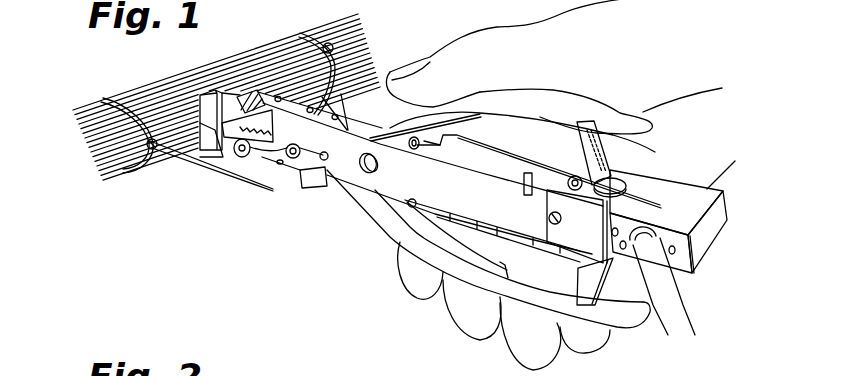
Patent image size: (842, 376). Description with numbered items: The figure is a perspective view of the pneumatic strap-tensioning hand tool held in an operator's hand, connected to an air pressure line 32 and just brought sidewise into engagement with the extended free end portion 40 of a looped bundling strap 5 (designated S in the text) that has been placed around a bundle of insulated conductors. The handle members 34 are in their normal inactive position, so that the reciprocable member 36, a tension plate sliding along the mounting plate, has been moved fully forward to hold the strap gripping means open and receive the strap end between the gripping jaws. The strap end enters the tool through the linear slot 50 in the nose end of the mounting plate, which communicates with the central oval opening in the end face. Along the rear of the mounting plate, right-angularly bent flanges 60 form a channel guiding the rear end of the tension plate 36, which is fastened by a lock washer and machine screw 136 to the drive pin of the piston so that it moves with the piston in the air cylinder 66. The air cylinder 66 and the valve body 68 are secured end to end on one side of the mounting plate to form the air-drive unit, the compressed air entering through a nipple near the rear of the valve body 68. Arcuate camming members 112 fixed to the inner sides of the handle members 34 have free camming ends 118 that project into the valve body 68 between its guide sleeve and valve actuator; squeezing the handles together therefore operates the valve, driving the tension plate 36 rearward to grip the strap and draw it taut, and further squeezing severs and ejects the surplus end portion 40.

The cable bundle 5 is at (106, 100).
The air pressure line 32 is at (673, 289).
The handle members 34 is at (660, 122).
The reciprocable member 36 is at (490, 203).
The extended free end portion 40 is at (236, 176).
The linear slot 50 is at (207, 127).
The flange 60 is at (594, 251).
The air cylinder 66 is at (508, 156).
The valve body 68 is at (670, 214).
The arcuate camming members 112 is at (593, 148).
The free camming ends 118 is at (622, 176).
The lock washer and machine screw 136 is at (377, 165).